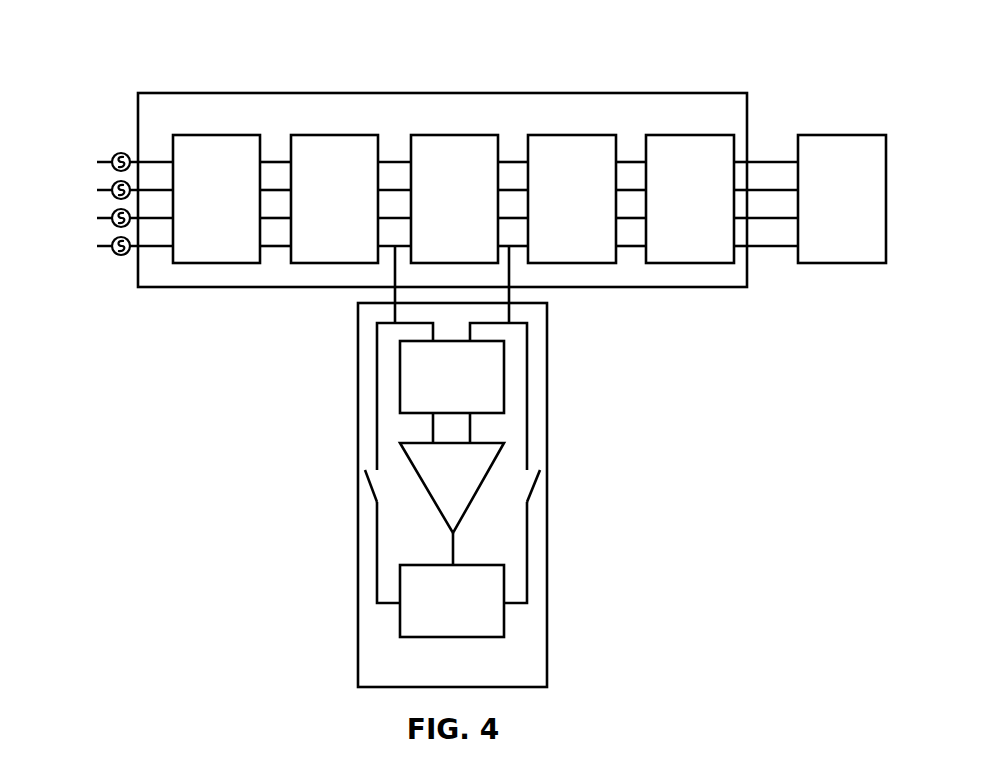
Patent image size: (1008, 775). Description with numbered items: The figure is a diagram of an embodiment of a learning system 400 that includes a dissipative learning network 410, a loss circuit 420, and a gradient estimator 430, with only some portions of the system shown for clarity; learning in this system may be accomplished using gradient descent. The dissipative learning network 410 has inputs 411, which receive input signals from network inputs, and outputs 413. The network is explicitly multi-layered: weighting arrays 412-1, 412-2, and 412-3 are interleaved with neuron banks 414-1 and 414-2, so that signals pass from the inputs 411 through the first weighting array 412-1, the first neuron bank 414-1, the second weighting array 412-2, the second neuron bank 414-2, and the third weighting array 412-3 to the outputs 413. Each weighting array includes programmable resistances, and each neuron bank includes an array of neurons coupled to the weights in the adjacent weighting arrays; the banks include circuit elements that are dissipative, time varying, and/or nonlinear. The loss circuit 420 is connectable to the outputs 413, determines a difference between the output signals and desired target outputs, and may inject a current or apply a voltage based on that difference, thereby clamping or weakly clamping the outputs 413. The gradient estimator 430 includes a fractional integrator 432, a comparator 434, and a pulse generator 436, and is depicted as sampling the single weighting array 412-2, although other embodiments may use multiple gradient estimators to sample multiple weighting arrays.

The learning system 400 is at (474, 66).
The dissipative learning network 410 is at (422, 126).
The inputs 411 is at (113, 279).
The weighting array 412-1 is at (184, 211).
The neuron bank 414-1 is at (302, 211).
The weighting array 412-2 is at (422, 211).
The neuron bank 414-2 is at (540, 211).
The weighting array 412-3 is at (658, 211).
The outputs 413 is at (770, 273).
The loss circuit 420 is at (821, 211).
The gradient estimator 430 is at (432, 672).
The fractional integrator 432 is at (432, 389).
The comparator 434 is at (432, 498).
The pulse generator 436 is at (432, 613).